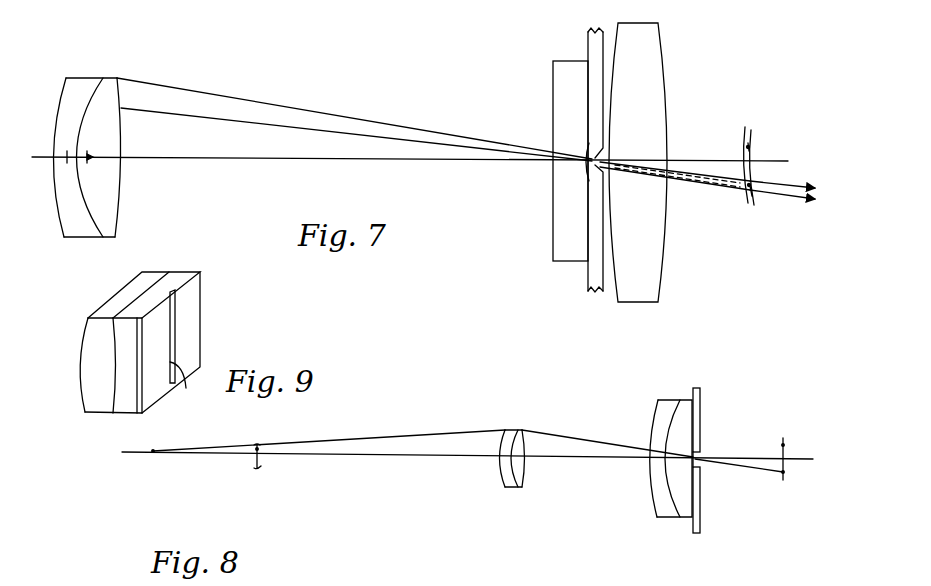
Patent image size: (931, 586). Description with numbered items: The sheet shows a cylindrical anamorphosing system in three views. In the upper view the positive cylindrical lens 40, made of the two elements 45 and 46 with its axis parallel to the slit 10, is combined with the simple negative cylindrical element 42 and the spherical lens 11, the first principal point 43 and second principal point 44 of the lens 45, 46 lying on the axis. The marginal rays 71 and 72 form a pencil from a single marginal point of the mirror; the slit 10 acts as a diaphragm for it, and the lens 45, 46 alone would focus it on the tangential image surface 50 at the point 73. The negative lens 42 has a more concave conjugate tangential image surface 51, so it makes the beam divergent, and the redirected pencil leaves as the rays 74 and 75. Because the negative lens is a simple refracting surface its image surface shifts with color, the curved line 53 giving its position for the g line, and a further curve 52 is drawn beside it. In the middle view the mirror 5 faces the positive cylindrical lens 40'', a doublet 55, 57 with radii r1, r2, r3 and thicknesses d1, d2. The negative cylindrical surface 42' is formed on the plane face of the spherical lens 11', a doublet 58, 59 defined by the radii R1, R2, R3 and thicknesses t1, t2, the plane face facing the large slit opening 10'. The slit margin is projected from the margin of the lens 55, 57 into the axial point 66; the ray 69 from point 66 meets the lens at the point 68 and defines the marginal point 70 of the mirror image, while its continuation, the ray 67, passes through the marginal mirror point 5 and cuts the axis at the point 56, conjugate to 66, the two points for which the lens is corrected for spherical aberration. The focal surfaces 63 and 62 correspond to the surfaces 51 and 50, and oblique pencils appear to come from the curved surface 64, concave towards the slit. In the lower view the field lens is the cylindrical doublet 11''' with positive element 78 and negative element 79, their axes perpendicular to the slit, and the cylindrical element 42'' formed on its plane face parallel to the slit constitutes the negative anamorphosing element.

In FIG. 7, the positive cylindrical lens 40 is at (86, 138).
In FIG. 7, the first principal point 43 is at (67, 157).
In FIG. 7, the second principal point 44 is at (93, 157).
In FIG. 7, the positive lens element 45 is at (71, 157).
In FIG. 7, the positive lens element 46 is at (100, 58).
In FIG. 7, the marginal ray 71 is at (354, 118).
In FIG. 7, the marginal ray 72 is at (290, 125).
In FIG. 7, the negative cylindrical element 42 is at (546, 161).
In FIG. 7, the slit 10 is at (557, 160).
In FIG. 9, the slit 10 is at (188, 384).
In FIG. 7, the spherical lens 11 is at (653, 162).
In FIG. 7, the tangential image surface 50 is at (748, 166).
In FIG. 7, the conjugate tangential image surface 51 is at (748, 188).
In FIG. 7, the detector surface 52 is at (753, 147).
In FIG. 7, the curved line 53 is at (746, 147).
In FIG. 7, the focus point 73 is at (753, 196).
In FIG. 7, the redirected pencil ray 74 is at (790, 185).
In FIG. 7, the redirected pencil ray 75 is at (795, 197).
In FIG. 9, the cylindrical doublet 11''' is at (140, 327).
In FIG. 9, the cylindrical element 42'' is at (194, 316).
In FIG. 9, the positive element 78 is at (94, 365).
In FIG. 9, the negative element 79 is at (150, 257).
In FIG. 8, the mirror 5 is at (249, 444).
In FIG. 8, the axial point 56 is at (153, 452).
In FIG. 8, the curved cylindrical surface 64 is at (259, 448).
In FIG. 8, the ray 67 is at (405, 436).
In FIG. 8, the ray 69 is at (590, 443).
In FIG. 8, the axial point 66 is at (722, 464).
In FIG. 8, the positive cylindrical lens 40'' is at (517, 456).
In FIG. 8, the positive lens element 55 is at (508, 488).
In FIG. 8, the positive lens element 57 is at (525, 478).
In FIG. 8, the lens point 68 is at (523, 432).
In FIG. 8, the first radius r1 is at (501, 476).
In FIG. 8, the second radius r2 is at (517, 433).
In FIG. 8, the third radius r3 is at (525, 456).
In FIG. 8, the first thickness d1 is at (506, 466).
In FIG. 8, the second thickness d2 is at (520, 466).
In FIG. 8, the spherical lens 11' is at (677, 450).
In FIG. 8, the spherical lens element 58 is at (661, 458).
In FIG. 8, the spherical lens element 59 is at (679, 458).
In FIG. 8, the first radius R1 is at (697, 427).
In FIG. 8, the second radius R2 is at (680, 402).
In FIG. 8, the third radius R3 is at (650, 493).
In FIG. 8, the first thickness t1 is at (674, 469).
In FIG. 8, the second thickness t2 is at (655, 469).
In FIG. 8, the negative cylindrical lens 42' is at (677, 476).
In FIG. 8, the large slit opening 10' is at (718, 424).
In FIG. 8, the marginal point of mirror image 70 is at (786, 476).
In FIG. 8, the focal surface 62 is at (785, 446).
In FIG. 8, the focal surface 63 is at (783, 473).